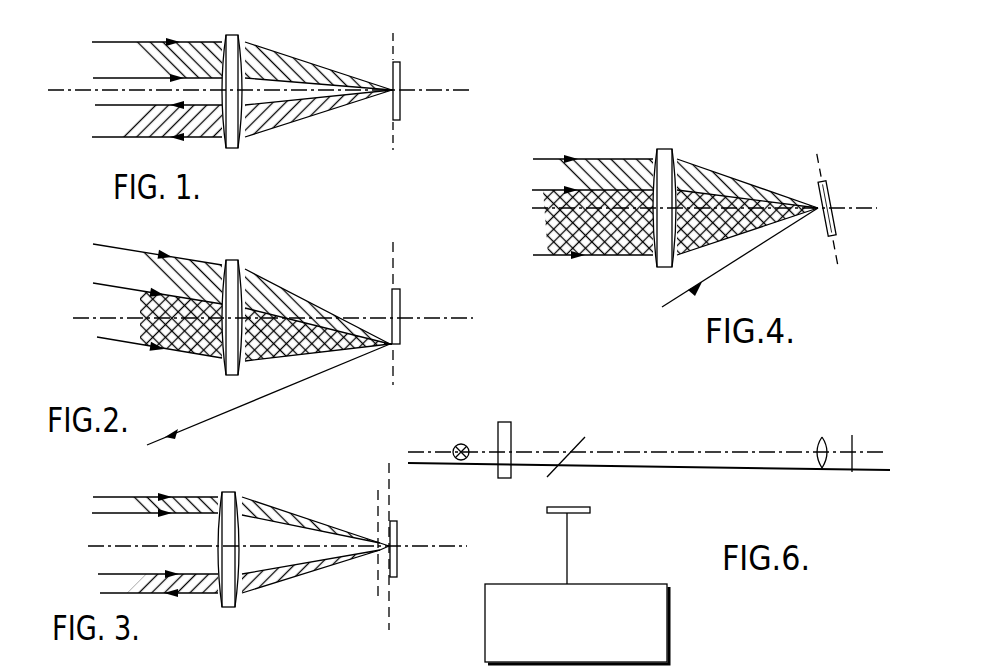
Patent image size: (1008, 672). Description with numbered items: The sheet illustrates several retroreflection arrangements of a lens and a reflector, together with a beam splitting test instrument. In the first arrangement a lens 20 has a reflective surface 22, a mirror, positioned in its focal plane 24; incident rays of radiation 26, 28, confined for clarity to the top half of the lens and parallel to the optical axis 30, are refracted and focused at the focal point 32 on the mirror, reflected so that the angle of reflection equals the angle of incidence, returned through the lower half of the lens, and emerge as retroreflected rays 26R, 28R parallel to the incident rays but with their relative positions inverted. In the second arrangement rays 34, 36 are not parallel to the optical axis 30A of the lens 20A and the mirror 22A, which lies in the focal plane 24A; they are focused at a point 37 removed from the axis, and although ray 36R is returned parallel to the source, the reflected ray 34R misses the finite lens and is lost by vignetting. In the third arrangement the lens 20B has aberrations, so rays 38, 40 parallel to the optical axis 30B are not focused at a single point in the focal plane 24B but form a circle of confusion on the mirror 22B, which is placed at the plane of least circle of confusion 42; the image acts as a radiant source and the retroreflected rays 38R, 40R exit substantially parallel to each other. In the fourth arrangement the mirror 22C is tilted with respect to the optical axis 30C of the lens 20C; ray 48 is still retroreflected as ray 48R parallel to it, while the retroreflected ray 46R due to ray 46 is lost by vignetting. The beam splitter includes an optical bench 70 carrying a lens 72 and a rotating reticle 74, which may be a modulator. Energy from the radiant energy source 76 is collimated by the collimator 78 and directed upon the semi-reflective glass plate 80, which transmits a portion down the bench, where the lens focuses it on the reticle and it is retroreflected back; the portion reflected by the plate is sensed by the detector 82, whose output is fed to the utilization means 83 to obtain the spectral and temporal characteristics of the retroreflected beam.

In FIG. 1, the lens 20 is at (240, 42).
In FIG. 1, the reflective surface 22 is at (400, 70).
In FIG. 1, the focal plane 24 is at (394, 42).
In FIG. 1, the ray of radiation 26 is at (137, 42).
In FIG. 1, the retroreflected ray 26R is at (94, 139).
In FIG. 1, the ray of radiation 28 is at (105, 78).
In FIG. 1, the retroreflected ray 28R is at (105, 105).
In FIG. 1, the optical axis 30 is at (447, 88).
In FIG. 1, the focal point 32 is at (391, 93).
In FIG. 2, the lens 20A is at (240, 265).
In FIG. 2, the mirror 22A is at (399, 304).
In FIG. 2, the focal plane 24A is at (393, 257).
In FIG. 2, the optical axis 30A is at (442, 318).
In FIG. 2, the ray 34 is at (145, 252).
In FIG. 2, the retroreflected ray 34R is at (235, 407).
In FIG. 2, the ray 36 is at (105, 283).
In FIG. 2, the retroreflected ray 36R is at (125, 345).
In FIG. 2, the point 37 is at (388, 347).
In FIG. 3, the lens 20B is at (238, 494).
In FIG. 3, the mirror 22B is at (398, 532).
In FIG. 3, the focal plane 24B is at (377, 507).
In FIG. 3, the optical axis 30B is at (410, 548).
In FIG. 3, the ray 38 is at (118, 495).
In FIG. 3, the retroreflected ray 38R is at (130, 593).
In FIG. 3, the ray 40 is at (105, 513).
In FIG. 3, the retroreflected ray 40R is at (130, 573).
In FIG. 3, the plane of least circle of confusion 42 is at (388, 473).
In FIG. 4, the lens 20C is at (676, 155).
In FIG. 4, the mirror 22C is at (830, 182).
In FIG. 4, the optical axis 30C is at (865, 208).
In FIG. 4, the ray 46 is at (550, 158).
In FIG. 4, the retroreflected ray 46R is at (760, 246).
In FIG. 4, the ray 48 is at (542, 190).
In FIG. 4, the retroreflected ray 48R is at (540, 257).
In FIG. 6, the optical bench 70 is at (775, 435).
In FIG. 6, the lens 72 is at (823, 440).
In FIG. 6, the reticle 74 is at (855, 443).
In FIG. 6, the radiant energy source 76 is at (462, 443).
In FIG. 6, the collimator 78 is at (512, 425).
In FIG. 6, the glass plate 80 is at (572, 448).
In FIG. 6, the detector 82 is at (563, 513).
In FIG. 6, the utilization means 83 is at (668, 611).